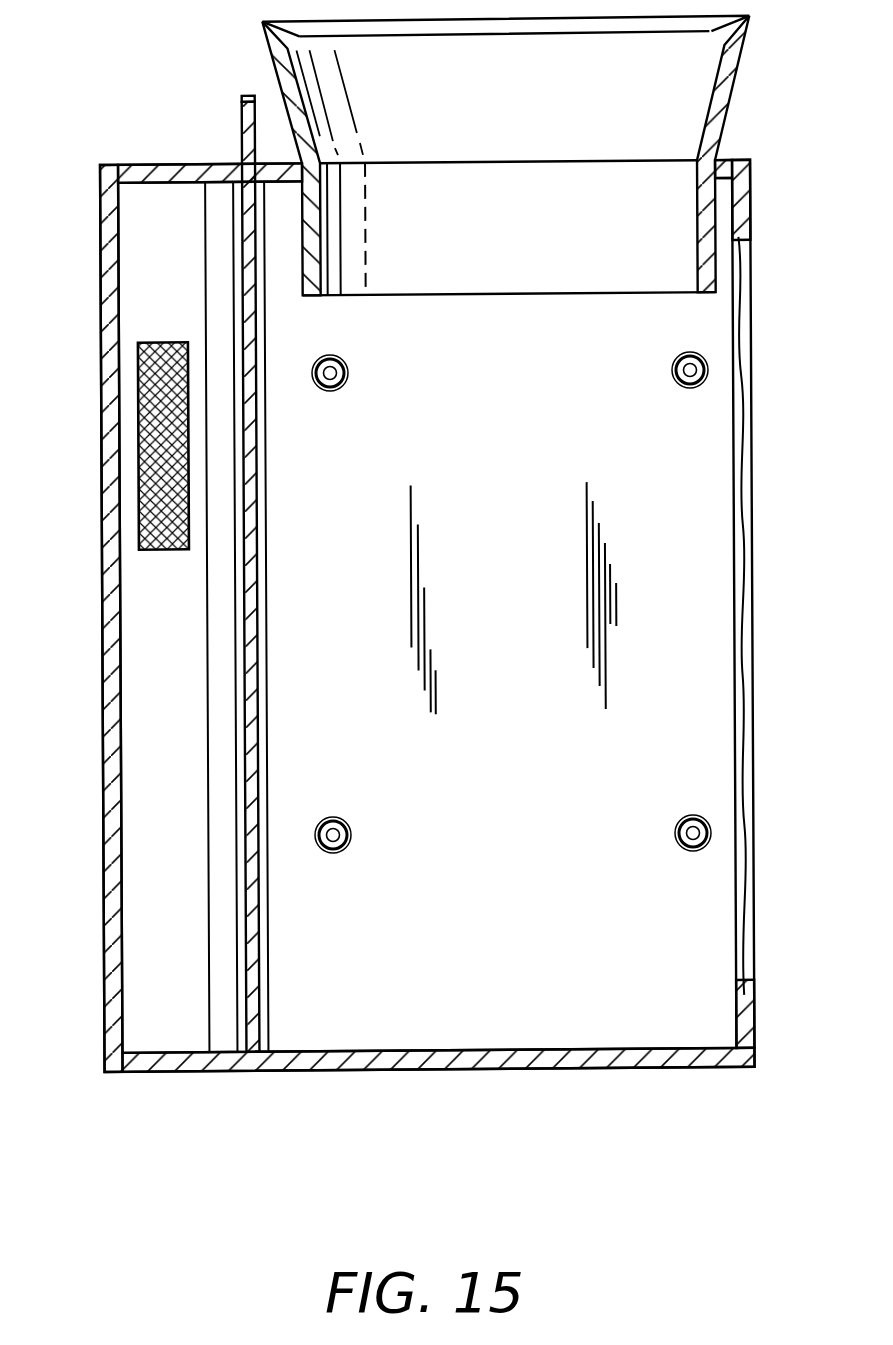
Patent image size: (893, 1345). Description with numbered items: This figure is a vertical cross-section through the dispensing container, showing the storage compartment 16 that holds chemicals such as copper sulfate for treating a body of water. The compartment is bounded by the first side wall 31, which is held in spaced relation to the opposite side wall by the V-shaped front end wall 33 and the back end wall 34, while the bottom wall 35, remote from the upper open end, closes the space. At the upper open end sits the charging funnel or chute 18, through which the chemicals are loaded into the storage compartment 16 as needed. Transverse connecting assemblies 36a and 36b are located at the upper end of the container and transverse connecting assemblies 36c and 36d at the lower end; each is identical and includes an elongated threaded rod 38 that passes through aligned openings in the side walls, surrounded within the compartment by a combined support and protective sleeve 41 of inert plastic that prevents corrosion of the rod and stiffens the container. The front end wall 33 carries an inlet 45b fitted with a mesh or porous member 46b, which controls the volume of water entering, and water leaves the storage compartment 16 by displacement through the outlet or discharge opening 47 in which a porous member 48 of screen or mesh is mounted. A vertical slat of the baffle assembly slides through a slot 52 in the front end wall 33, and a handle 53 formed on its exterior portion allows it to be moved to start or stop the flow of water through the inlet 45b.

The storage compartment 16 is at (742, 1009).
The charging funnel or chute 18 is at (282, 48).
The first side wall 31 is at (717, 652).
The front end wall 33 is at (104, 216).
The back end wall 34 is at (720, 1012).
The bottom wall 35 is at (612, 1061).
The transverse connecting assembly 36a is at (673, 359).
The transverse connecting assembly 36b is at (342, 354).
The transverse connecting assembly 36c is at (684, 814).
The transverse connecting assembly 36d is at (348, 820).
The elongated threaded rod 38 is at (330, 388).
The combined support and protective sleeve 41 is at (328, 358).
The inlet 45b is at (108, 445).
The mesh or porous member 46b is at (163, 483).
The outlet or discharge opening 47 is at (738, 241).
The porous member 48 is at (743, 378).
The slot 52 is at (251, 568).
The handle 53 is at (243, 99).